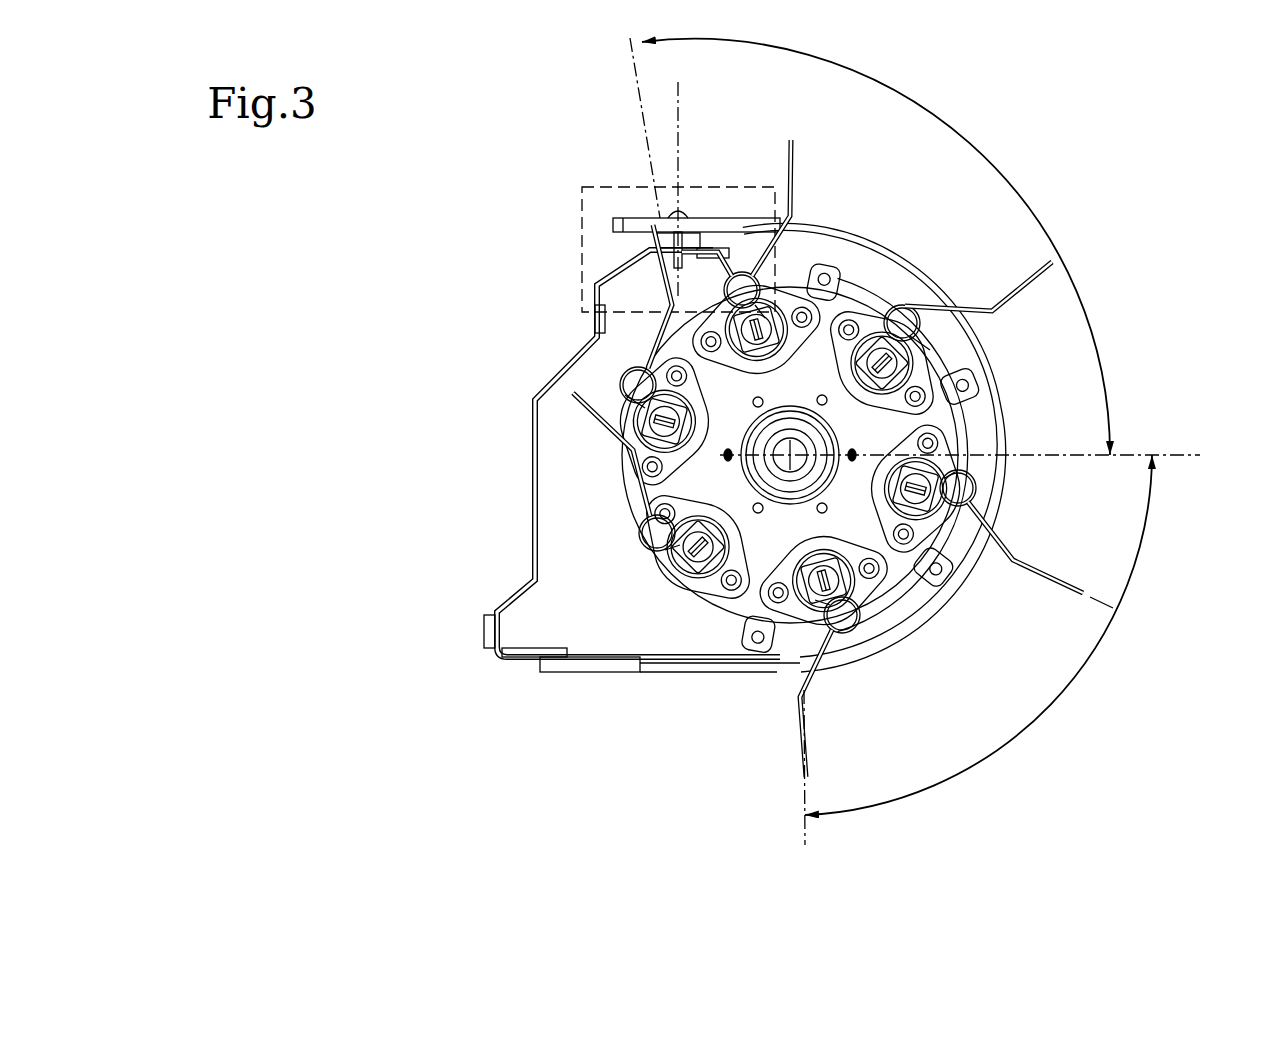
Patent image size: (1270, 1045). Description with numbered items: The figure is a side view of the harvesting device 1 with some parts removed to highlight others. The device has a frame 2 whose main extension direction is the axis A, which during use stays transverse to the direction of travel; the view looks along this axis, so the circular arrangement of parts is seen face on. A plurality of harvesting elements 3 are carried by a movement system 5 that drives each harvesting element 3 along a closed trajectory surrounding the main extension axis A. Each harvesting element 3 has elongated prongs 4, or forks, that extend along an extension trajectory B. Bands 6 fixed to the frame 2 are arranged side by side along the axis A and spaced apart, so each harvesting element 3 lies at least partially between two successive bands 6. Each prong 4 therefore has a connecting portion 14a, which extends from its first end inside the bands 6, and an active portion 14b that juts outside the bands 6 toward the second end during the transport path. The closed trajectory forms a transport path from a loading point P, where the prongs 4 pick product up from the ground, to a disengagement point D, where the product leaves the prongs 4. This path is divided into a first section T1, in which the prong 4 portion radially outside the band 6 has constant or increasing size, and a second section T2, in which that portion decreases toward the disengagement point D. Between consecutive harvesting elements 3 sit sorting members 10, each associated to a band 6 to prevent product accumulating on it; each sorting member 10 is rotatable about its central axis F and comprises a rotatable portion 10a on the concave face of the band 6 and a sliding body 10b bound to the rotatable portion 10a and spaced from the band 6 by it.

The harvesting device 1 is at (530, 244).
The frame 2 is at (523, 561).
The harvesting element 3 is at (722, 646).
The elongated harvesting prong 4 is at (797, 725).
The movement system 5 is at (771, 528).
The band 6 is at (878, 240).
The sorting member 10 is at (574, 310).
The rotatable portion 10a is at (685, 238).
The sliding body 10b is at (718, 262).
The connecting portion 14a is at (742, 272).
The active portion 14b is at (828, 455).
The main extension axis A is at (790, 455).
The extension trajectory B is at (1103, 600).
The disengagement point D is at (613, 222).
The central axis of the sorting member F is at (680, 100).
The loading point P is at (808, 774).
The first section of the transport path T1 is at (1081, 674).
The second section of the transport path T2 is at (997, 167).